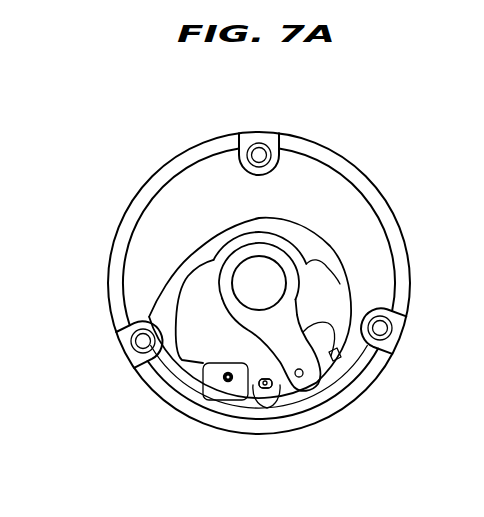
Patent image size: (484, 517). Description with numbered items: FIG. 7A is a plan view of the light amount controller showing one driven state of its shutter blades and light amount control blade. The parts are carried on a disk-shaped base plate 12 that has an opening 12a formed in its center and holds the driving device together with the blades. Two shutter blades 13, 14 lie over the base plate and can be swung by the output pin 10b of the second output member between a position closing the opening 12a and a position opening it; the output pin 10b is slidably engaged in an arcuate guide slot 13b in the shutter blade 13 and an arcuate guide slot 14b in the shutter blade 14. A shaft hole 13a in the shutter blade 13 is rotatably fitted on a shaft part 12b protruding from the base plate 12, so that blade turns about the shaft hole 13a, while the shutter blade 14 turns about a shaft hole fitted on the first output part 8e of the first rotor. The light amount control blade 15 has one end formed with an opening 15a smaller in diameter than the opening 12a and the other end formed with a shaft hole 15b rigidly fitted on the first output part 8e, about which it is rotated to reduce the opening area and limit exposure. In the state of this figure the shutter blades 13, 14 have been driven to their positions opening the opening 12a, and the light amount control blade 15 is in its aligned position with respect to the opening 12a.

The base plate 12 is at (363, 185).
The opening 12a is at (261, 270).
The shaft part 12b is at (205, 408).
The shutter blade 13 is at (320, 280).
The shaft hole 13a is at (200, 363).
The arcuate guide slot 13b is at (270, 388).
The shutter blade 14 is at (192, 307).
The arcuate guide slot 14b is at (265, 383).
The light amount control blade 15 is at (287, 345).
The opening 15a is at (218, 262).
The shaft hole 15b is at (316, 393).
The first output part 8e is at (305, 373).
The output pin 10b is at (229, 381).